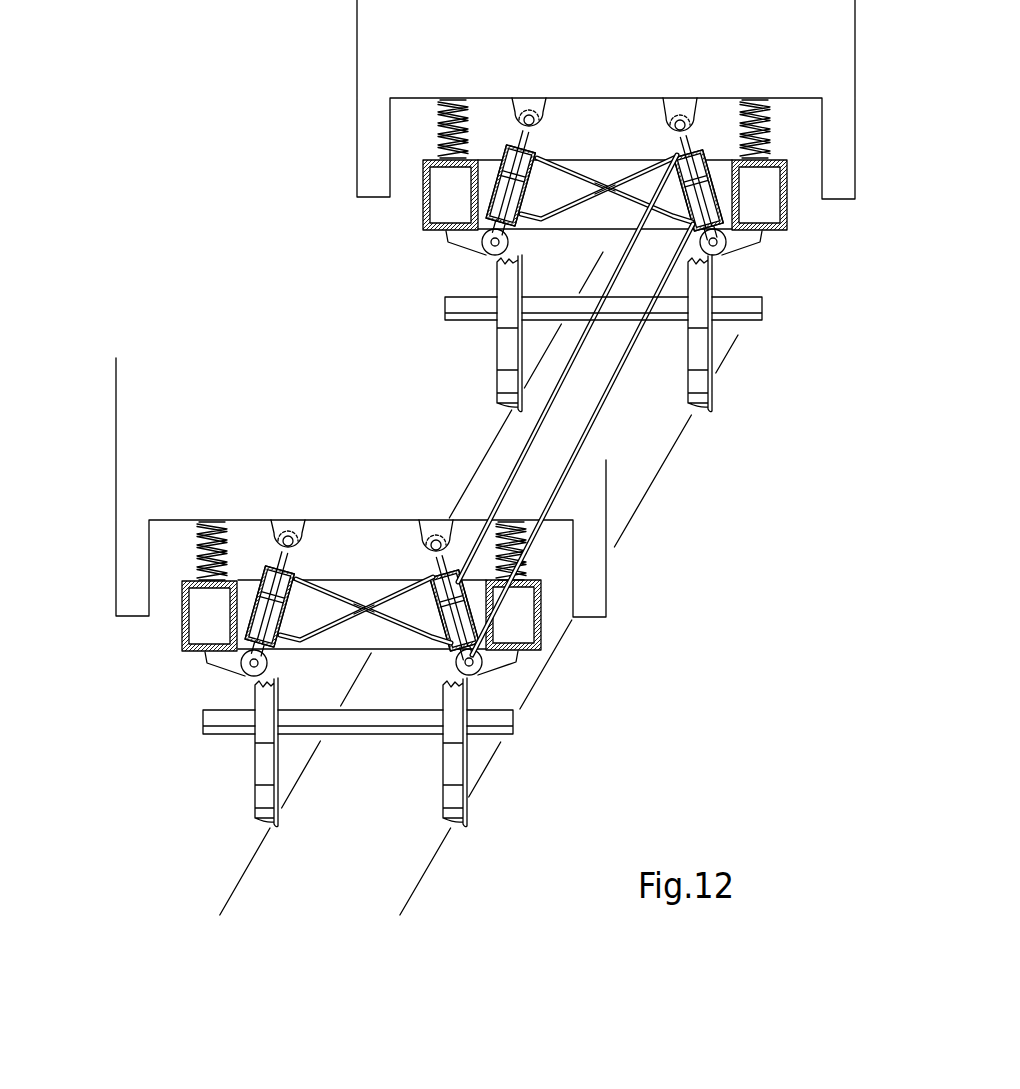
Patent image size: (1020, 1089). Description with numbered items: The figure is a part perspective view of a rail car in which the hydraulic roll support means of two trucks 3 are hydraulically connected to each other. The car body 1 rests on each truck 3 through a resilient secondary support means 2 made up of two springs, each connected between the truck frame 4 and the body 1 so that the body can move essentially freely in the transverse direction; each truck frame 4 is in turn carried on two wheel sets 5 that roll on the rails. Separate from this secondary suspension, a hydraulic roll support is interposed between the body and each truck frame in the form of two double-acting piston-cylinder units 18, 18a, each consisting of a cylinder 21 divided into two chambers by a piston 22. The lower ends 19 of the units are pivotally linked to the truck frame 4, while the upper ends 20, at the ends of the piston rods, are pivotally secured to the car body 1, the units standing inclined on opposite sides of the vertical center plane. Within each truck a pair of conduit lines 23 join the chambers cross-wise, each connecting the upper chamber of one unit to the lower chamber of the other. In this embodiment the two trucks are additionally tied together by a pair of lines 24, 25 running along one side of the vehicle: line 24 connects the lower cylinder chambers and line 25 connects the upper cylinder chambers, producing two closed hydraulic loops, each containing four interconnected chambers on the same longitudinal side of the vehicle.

The car body 1 is at (363, 33).
The secondary support means 2 is at (440, 124).
The truck 3 is at (396, 221).
The truck frame 4 is at (784, 210).
The wheel sets 5 is at (479, 341).
The double-acting hydraulic piston-cylinder unit 18 is at (550, 177).
The double-acting hydraulic piston-cylinder unit 18a is at (663, 152).
The lower ends 19 is at (496, 254).
The upper ends 20 is at (541, 123).
The cylinder 21 is at (504, 152).
The piston 22 is at (522, 192).
The conduit lines 23 is at (626, 202).
The line 24 is at (633, 346).
The line 25 is at (582, 346).